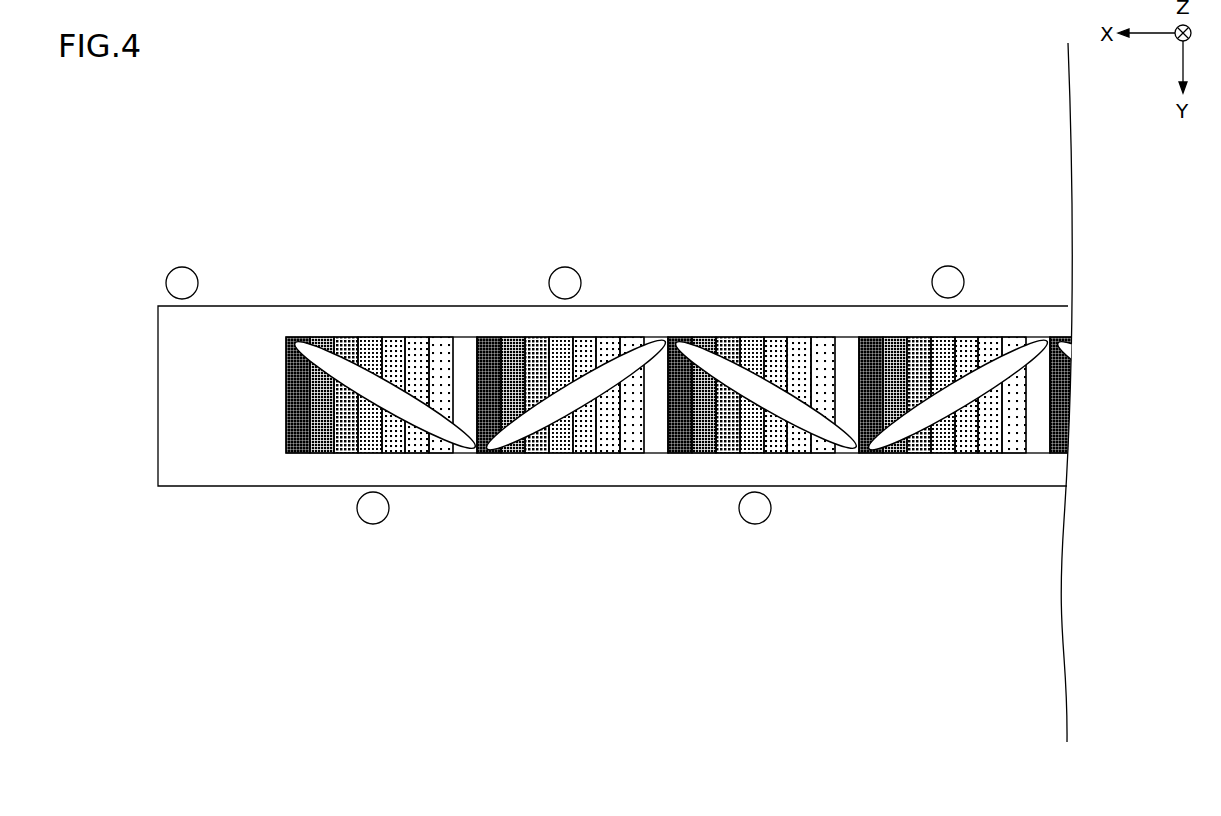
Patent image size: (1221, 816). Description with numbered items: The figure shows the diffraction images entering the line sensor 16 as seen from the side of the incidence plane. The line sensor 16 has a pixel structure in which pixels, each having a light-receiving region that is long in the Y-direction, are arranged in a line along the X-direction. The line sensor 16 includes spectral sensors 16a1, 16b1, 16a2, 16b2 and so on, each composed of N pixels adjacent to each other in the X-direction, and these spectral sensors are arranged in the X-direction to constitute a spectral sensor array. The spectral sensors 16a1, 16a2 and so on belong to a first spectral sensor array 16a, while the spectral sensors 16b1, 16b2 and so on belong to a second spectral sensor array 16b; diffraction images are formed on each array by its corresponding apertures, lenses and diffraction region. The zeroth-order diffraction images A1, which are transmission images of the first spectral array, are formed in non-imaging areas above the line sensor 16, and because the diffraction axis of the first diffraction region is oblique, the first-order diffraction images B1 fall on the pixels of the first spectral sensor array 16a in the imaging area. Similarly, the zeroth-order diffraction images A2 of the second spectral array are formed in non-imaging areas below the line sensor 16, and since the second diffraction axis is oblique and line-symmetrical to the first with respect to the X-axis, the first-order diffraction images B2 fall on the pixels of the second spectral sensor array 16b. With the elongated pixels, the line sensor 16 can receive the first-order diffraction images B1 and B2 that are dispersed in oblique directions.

The line sensor 16 is at (150, 402).
The first spectral sensor array 16a is at (352, 64).
The spectral sensor 16a1 is at (478, 156).
The spectral sensor 16a2 is at (860, 156).
The second spectral sensor array 16b is at (1067, 735).
The spectral sensor 16b1 is at (668, 634).
The spectral sensor 16b2 is at (1050, 634).
The 0th-order diffraction images A1 is at (182, 267).
The 1st-order diffraction images B1 is at (396, 377).
The 0th-order diffraction images A2 is at (373, 524).
The 1st-order diffraction images B2 is at (584, 445).